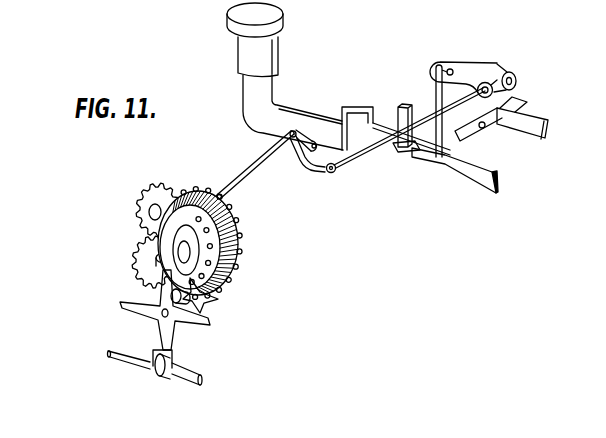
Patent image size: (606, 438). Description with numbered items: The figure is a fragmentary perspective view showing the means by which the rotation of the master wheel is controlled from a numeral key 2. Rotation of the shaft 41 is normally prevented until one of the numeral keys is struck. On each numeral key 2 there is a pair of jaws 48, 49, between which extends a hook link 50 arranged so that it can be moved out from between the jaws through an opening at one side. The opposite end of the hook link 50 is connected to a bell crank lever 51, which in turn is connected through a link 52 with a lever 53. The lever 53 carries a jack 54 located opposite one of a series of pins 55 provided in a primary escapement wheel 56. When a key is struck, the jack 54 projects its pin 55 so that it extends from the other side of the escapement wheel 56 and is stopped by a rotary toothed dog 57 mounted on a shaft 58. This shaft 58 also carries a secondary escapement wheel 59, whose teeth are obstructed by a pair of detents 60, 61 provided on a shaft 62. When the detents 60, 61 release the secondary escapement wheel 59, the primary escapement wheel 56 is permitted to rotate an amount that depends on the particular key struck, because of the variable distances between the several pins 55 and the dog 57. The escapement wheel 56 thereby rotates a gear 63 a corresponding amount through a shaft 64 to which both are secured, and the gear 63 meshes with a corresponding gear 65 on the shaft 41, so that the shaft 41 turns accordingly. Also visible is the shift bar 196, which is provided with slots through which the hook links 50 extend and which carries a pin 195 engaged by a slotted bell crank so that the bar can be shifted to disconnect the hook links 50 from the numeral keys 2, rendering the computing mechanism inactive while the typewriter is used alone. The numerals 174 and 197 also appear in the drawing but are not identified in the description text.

The numeral key 2 is at (338, 79).
The shaft 41 is at (140, 194).
The jaw 48 is at (402, 113).
The jaw 49 is at (407, 153).
The hook link 50 is at (446, 86).
The bell crank lever 51 is at (489, 70).
The link 52 is at (341, 170).
The lever 53 is at (307, 163).
The jack 54 is at (258, 171).
The pin 55 is at (216, 193).
The primary escapement wheel 56 is at (239, 268).
The rotary toothed dog 57 is at (216, 299).
The shaft 58 is at (205, 315).
The secondary escapement wheel 59 is at (122, 306).
The detent 60 is at (160, 351).
The detent 61 is at (143, 366).
The shaft 62 is at (194, 376).
The gear 63 is at (137, 248).
The shaft 64 is at (150, 268).
The gear 65 is at (138, 209).
The element (partial) 174 is at (356, 1).
The pin 195 is at (470, 145).
The shift bar 196 is at (468, 137).
The post 197 is at (450, 108).